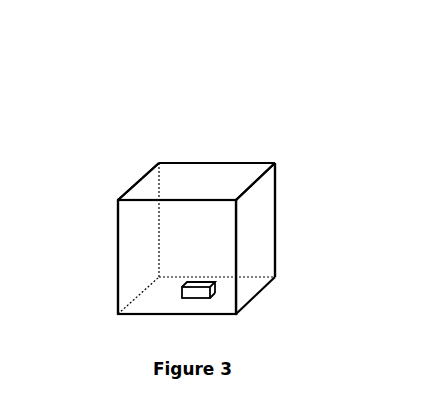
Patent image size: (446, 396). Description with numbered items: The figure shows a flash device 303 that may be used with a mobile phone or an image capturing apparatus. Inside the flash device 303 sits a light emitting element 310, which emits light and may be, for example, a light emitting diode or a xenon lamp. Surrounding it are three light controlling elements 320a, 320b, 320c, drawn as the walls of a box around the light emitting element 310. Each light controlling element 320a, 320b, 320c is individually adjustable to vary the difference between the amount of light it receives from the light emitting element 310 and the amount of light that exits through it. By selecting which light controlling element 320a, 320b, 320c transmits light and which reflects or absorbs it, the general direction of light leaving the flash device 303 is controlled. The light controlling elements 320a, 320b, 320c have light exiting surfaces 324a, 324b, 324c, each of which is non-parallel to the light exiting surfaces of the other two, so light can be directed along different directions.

The flash device 303 is at (280, 117).
The light emitting element 310 is at (202, 283).
The light controlling element 320a is at (178, 182).
The light controlling element 320b is at (263, 247).
The light controlling element 320c is at (128, 237).
The light exiting surface 324a is at (242, 170).
The light exiting surface 324b is at (267, 208).
The light exiting surface 324c is at (133, 270).